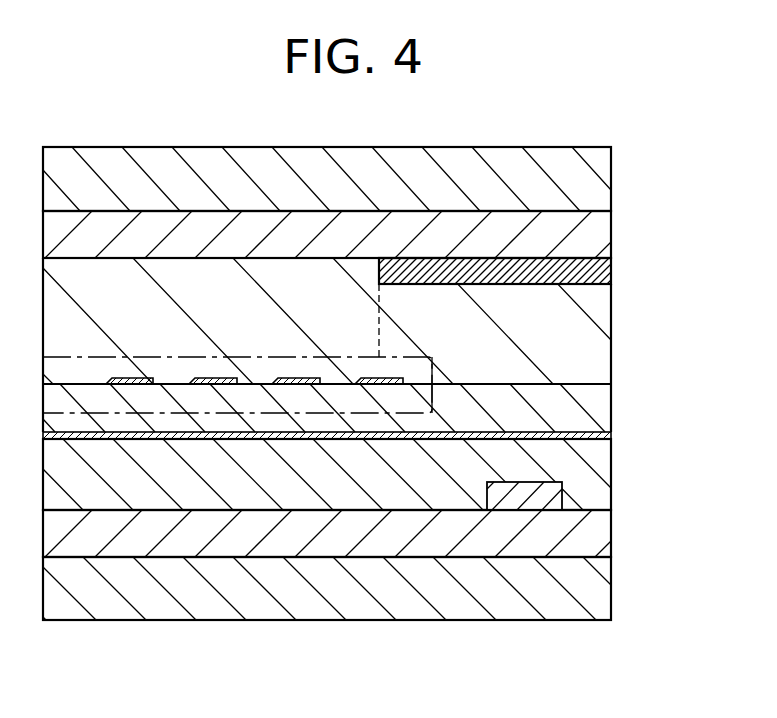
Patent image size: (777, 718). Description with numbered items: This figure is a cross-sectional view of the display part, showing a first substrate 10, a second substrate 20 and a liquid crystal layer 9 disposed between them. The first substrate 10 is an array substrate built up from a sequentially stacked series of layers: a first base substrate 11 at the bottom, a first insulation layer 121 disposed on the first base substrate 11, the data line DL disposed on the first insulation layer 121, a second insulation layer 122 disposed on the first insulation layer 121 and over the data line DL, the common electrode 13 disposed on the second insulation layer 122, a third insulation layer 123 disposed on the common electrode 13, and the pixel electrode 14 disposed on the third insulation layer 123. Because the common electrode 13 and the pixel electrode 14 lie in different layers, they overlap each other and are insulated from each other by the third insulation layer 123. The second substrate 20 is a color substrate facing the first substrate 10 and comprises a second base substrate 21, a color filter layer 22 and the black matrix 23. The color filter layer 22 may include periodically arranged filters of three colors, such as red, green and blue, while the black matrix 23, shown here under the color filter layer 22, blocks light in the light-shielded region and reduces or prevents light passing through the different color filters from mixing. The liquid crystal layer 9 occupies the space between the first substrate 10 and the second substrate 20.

The second substrate 20 is at (384, 215).
The second base substrate 21 is at (610, 183).
The color filter layer 22 is at (610, 234).
The black matrix 23 is at (529, 270).
The liquid crystal layer 9 is at (610, 322).
The pixel electrode 14 is at (432, 360).
The third insulation layer 123 is at (610, 405).
The common electrode 13 is at (610, 434).
The second insulation layer 122 is at (610, 472).
The first insulation layer 121 is at (610, 537).
The first base substrate 11 is at (360, 588).
The first substrate 10 is at (395, 521).
The data line DL is at (528, 498).